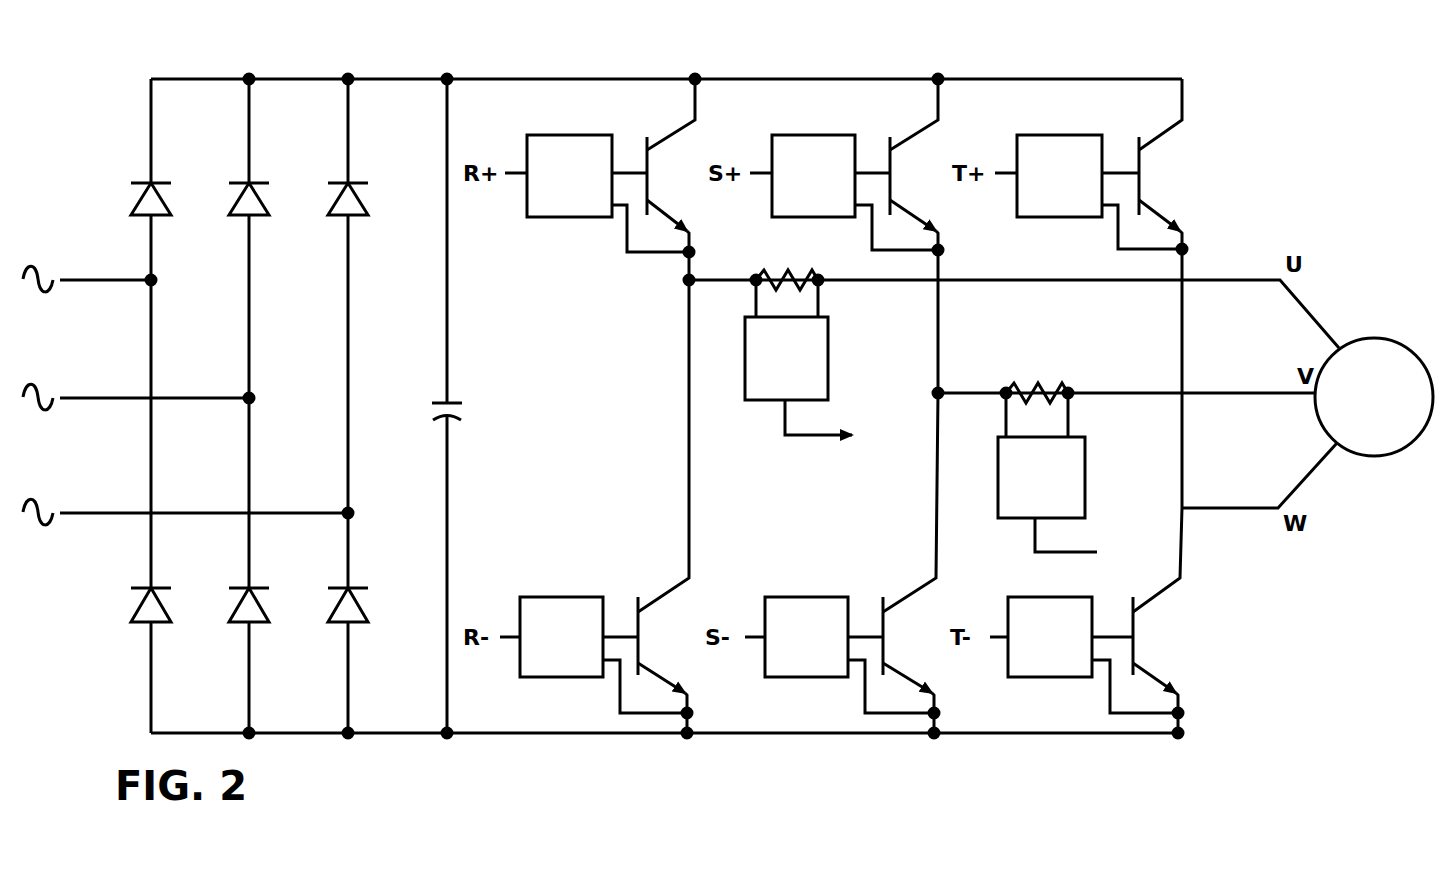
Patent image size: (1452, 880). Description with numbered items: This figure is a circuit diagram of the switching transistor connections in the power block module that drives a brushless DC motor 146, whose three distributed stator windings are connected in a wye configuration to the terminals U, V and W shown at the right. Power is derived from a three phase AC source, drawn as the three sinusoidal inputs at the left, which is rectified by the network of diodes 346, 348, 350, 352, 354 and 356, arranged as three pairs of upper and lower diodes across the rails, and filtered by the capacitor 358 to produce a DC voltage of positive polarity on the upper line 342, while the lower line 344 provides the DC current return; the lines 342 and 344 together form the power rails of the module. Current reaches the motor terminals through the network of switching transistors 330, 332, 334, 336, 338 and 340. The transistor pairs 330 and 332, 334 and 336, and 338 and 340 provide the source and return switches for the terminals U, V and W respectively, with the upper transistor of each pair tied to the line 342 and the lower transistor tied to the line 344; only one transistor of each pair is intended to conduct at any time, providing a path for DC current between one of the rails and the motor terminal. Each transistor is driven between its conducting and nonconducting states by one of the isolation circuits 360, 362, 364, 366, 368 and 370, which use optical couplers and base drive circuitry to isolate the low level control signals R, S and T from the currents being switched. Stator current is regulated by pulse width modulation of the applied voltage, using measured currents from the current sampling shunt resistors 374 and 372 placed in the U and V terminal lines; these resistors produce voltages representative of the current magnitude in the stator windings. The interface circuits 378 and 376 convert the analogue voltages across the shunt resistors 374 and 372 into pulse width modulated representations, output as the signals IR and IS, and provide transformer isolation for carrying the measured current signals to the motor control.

The motor 146 is at (1362, 355).
The switching transistor 330 is at (682, 128).
The switching transistor 332 is at (672, 598).
The switching transistor 334 is at (926, 128).
The switching transistor 336 is at (918, 563).
The switching transistor 338 is at (1170, 118).
The switching transistor 340 is at (1165, 591).
The line 342 is at (549, 79).
The line 344 is at (548, 733).
The diode 346 is at (165, 217).
The diode 348 is at (165, 624).
The diode 350 is at (263, 217).
The diode 352 is at (263, 624).
The diode 354 is at (362, 217).
The diode 356 is at (362, 624).
The capacitor 358 is at (456, 402).
The isolation circuit 360 is at (585, 136).
The isolation circuit 362 is at (565, 598).
The isolation circuit 364 is at (826, 137).
The isolation circuit 366 is at (810, 598).
The isolation circuit 368 is at (1057, 137).
The isolation circuit 370 is at (1050, 598).
The current sampling shunt resistor 372 is at (1042, 386).
The current sampling shunt resistor 374 is at (793, 270).
The interface circuit 376 is at (1085, 468).
The interface circuit 378 is at (828, 338).